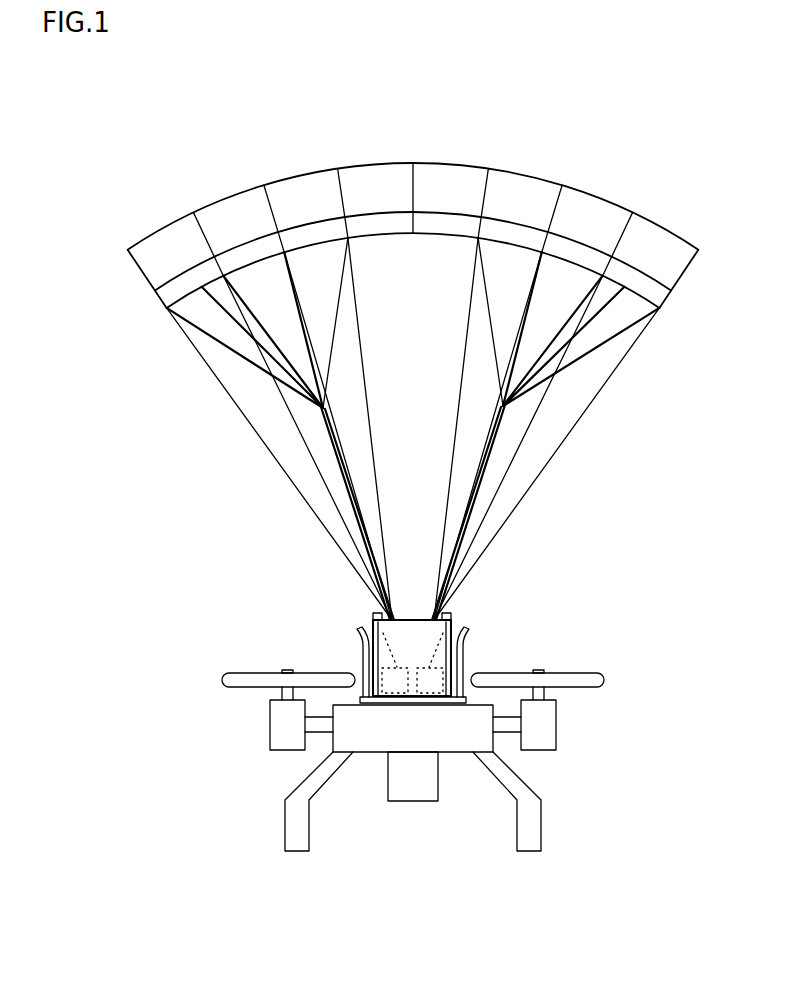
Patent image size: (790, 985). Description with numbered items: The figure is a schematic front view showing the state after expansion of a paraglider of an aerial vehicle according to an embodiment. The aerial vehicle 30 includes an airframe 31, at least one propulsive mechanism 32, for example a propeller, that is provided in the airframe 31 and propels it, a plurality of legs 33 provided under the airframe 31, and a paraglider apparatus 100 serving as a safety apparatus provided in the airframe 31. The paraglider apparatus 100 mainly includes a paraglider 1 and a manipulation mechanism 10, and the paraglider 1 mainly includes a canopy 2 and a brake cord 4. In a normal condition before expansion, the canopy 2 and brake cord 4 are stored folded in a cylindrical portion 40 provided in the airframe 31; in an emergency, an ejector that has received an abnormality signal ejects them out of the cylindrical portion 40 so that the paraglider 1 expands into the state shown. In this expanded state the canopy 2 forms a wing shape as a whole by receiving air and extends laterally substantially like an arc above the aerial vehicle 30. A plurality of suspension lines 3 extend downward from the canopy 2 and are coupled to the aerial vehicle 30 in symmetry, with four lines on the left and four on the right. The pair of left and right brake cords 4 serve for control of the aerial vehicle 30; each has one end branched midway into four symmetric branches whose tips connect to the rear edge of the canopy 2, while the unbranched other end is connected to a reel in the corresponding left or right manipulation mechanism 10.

The paraglider apparatus 100 is at (205, 152).
The paraglider 1 is at (355, 165).
The canopy 2 is at (442, 163).
The suspension lines 3 is at (295, 422).
The brake cord 4 is at (343, 475).
The manipulation mechanism 10 is at (368, 627).
The cylindrical portion 40 is at (382, 652).
The aerial vehicle 30 is at (410, 813).
The airframe 31 is at (378, 740).
The propulsive mechanism 32 is at (240, 680).
The legs 33 is at (300, 840).